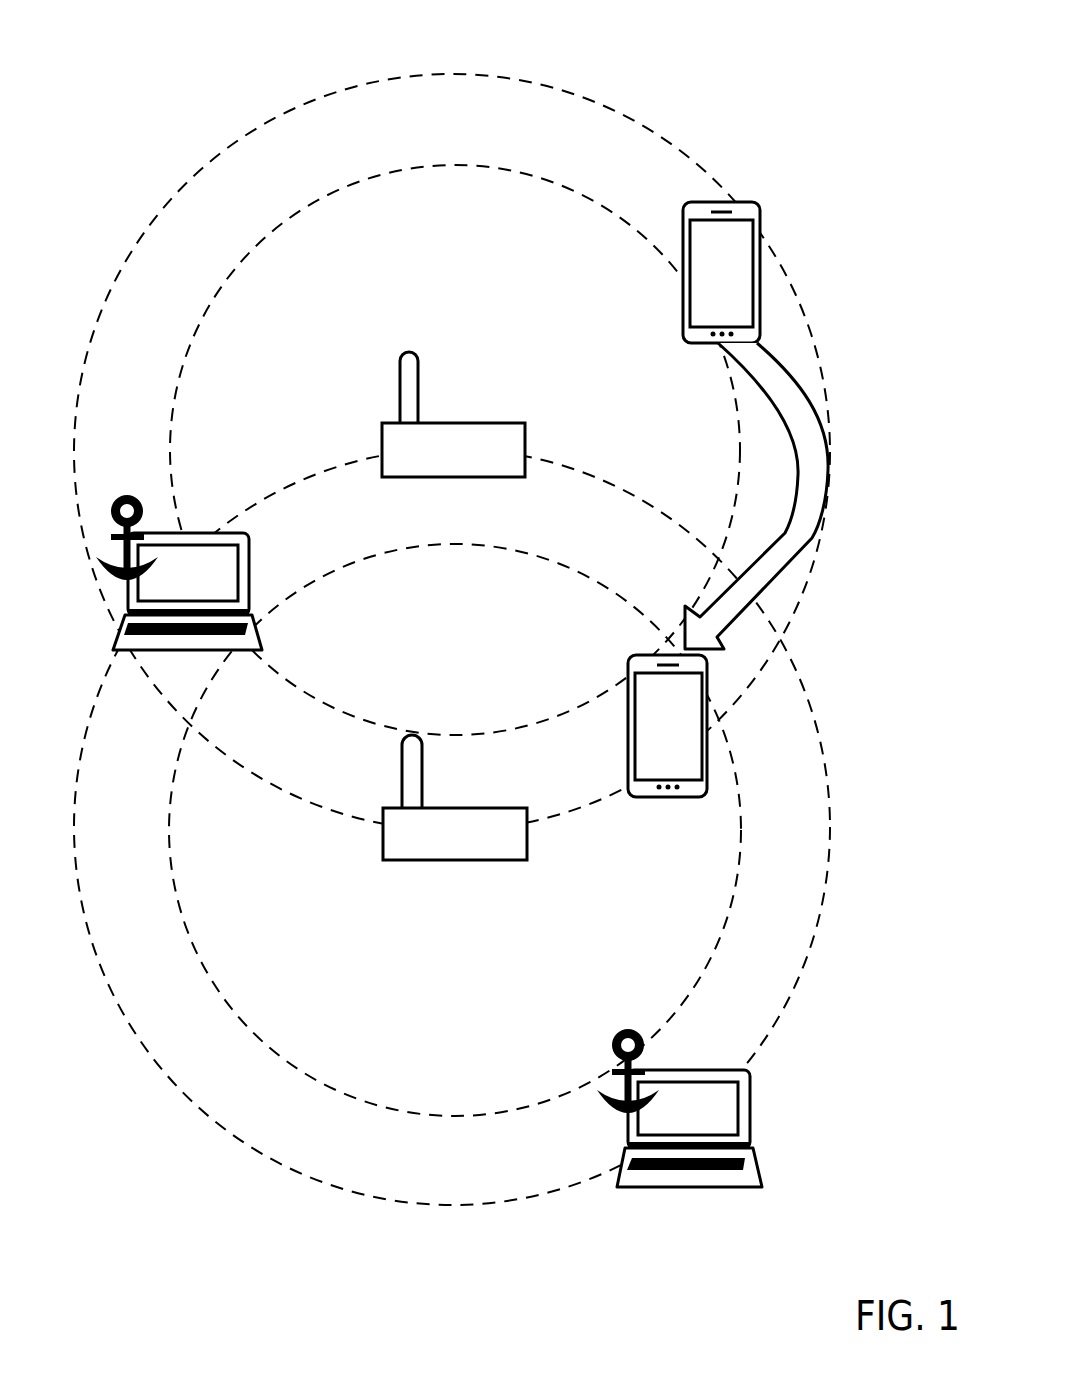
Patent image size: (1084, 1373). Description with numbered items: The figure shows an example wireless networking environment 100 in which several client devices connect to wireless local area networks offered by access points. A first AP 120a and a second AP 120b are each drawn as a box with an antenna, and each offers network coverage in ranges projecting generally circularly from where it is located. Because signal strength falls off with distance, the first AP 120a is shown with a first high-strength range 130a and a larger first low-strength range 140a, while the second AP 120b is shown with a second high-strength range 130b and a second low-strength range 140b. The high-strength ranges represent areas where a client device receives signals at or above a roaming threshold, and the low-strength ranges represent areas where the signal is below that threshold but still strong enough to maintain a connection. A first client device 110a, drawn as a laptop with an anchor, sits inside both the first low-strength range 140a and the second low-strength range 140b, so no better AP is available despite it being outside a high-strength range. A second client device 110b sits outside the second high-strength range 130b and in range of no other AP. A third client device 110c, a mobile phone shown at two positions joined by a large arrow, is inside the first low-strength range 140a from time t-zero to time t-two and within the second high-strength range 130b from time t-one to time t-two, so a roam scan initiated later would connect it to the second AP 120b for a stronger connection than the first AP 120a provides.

The wireless networking environment 100 is at (133, 77).
The first client device 110a is at (235, 533).
The second client device 110b is at (750, 1073).
The third client device 110c is at (687, 312).
The first AP 120a is at (457, 423).
The second AP 120b is at (458, 860).
The first high-strength range 130a is at (427, 200).
The second high-strength range 130b is at (285, 1007).
The first low-strength range 140a is at (233, 182).
The second low-strength range 140b is at (340, 1160).